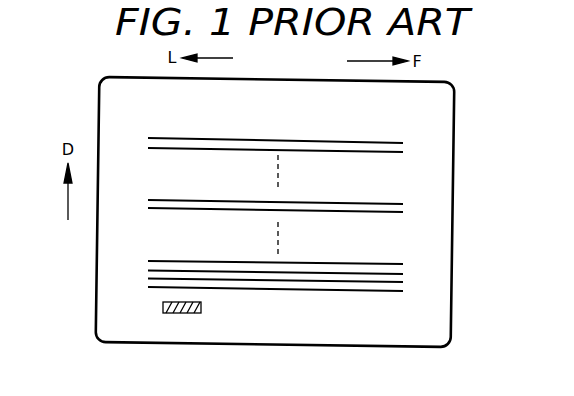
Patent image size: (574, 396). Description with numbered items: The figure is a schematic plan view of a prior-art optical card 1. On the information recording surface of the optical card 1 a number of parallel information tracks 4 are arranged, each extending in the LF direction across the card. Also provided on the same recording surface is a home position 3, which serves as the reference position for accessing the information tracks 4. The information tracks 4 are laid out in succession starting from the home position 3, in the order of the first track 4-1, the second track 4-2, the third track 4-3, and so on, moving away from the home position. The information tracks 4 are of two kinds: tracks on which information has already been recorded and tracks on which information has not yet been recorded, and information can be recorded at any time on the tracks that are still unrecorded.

The optical card 1 is at (454, 103).
The home position 3 is at (201, 308).
The information tracks 4 is at (394, 203).
The information track 4-1 is at (147, 290).
The information track 4-2 is at (147, 281).
The information track 4-3 is at (147, 273).